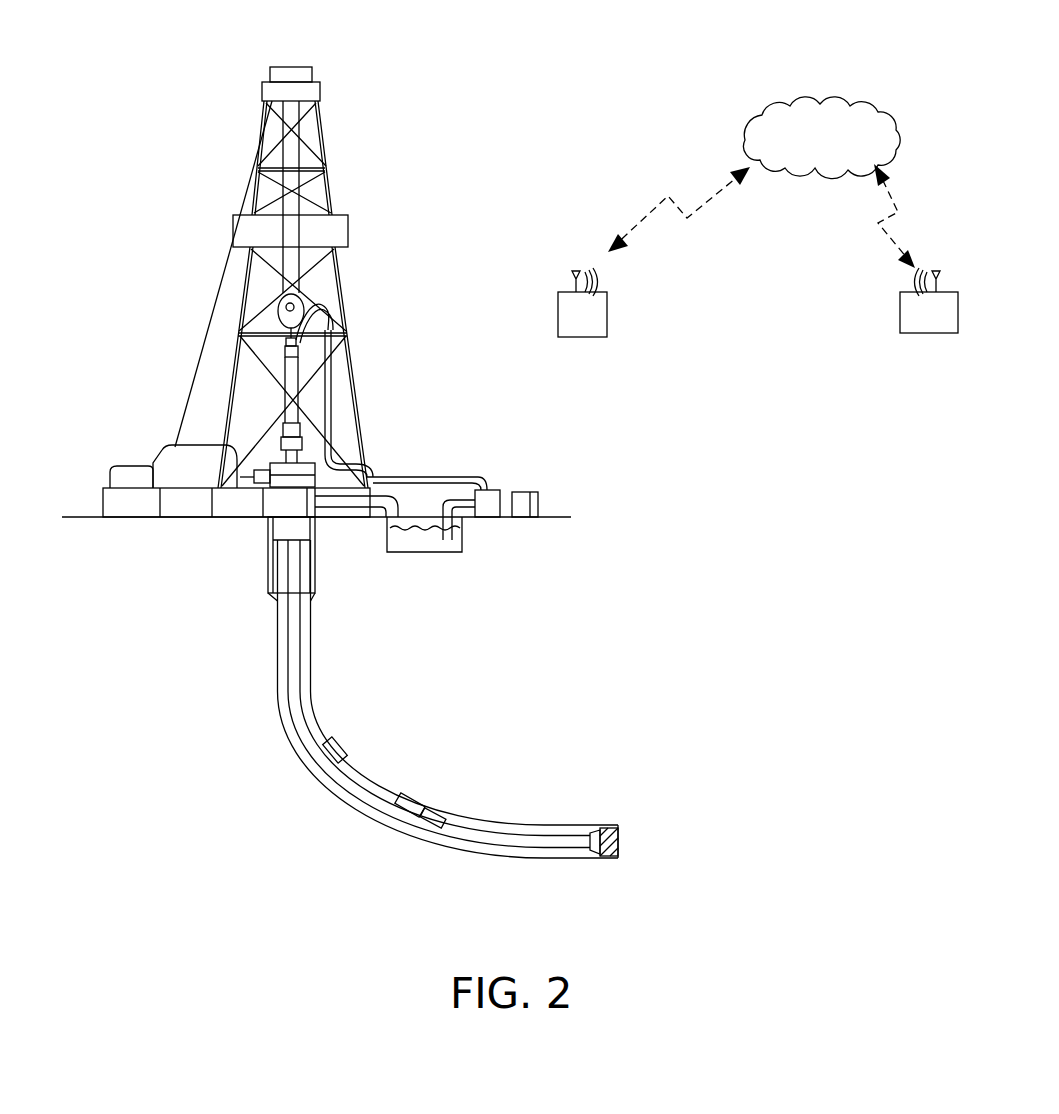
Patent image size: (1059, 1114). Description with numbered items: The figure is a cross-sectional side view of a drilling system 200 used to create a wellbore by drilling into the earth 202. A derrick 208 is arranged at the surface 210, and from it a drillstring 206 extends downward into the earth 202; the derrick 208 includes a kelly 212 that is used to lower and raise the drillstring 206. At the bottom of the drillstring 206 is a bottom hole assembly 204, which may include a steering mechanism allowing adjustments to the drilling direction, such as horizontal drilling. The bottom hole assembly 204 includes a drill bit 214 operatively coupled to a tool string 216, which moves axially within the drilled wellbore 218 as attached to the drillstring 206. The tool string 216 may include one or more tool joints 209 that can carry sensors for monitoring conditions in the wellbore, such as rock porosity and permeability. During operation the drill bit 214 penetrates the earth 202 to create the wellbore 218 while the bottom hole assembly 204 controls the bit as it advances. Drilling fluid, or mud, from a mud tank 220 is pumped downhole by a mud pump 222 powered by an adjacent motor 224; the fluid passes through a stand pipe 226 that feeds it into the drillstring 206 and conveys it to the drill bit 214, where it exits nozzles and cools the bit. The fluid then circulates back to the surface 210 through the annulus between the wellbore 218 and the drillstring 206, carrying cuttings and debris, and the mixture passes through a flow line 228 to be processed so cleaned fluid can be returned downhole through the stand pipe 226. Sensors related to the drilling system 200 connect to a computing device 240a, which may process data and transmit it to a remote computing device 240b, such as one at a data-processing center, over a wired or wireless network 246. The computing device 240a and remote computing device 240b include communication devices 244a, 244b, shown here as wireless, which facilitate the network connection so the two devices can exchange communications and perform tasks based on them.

The drilling system 200 is at (546, 101).
The earth 202 is at (121, 556).
The bottom hole assembly 204 is at (567, 827).
The drillstring 206 is at (304, 680).
The derrick 208 is at (241, 300).
The tool joints 209 is at (341, 745).
The surface 210 is at (76, 517).
The kelly 212 is at (298, 308).
The drill bit 214 is at (620, 842).
The tool string 216 is at (486, 788).
The wellbore 218 is at (552, 862).
The mud tank 220 is at (415, 553).
The mud pump 222 is at (493, 492).
The motor 224 is at (535, 500).
The stand pipe 226 is at (333, 392).
The flow line 228 is at (398, 492).
The computing device 240a is at (558, 320).
The remote computing device 240b is at (916, 337).
The communication device 244a is at (576, 272).
The communication device 244b is at (936, 272).
The network 246 is at (748, 126).